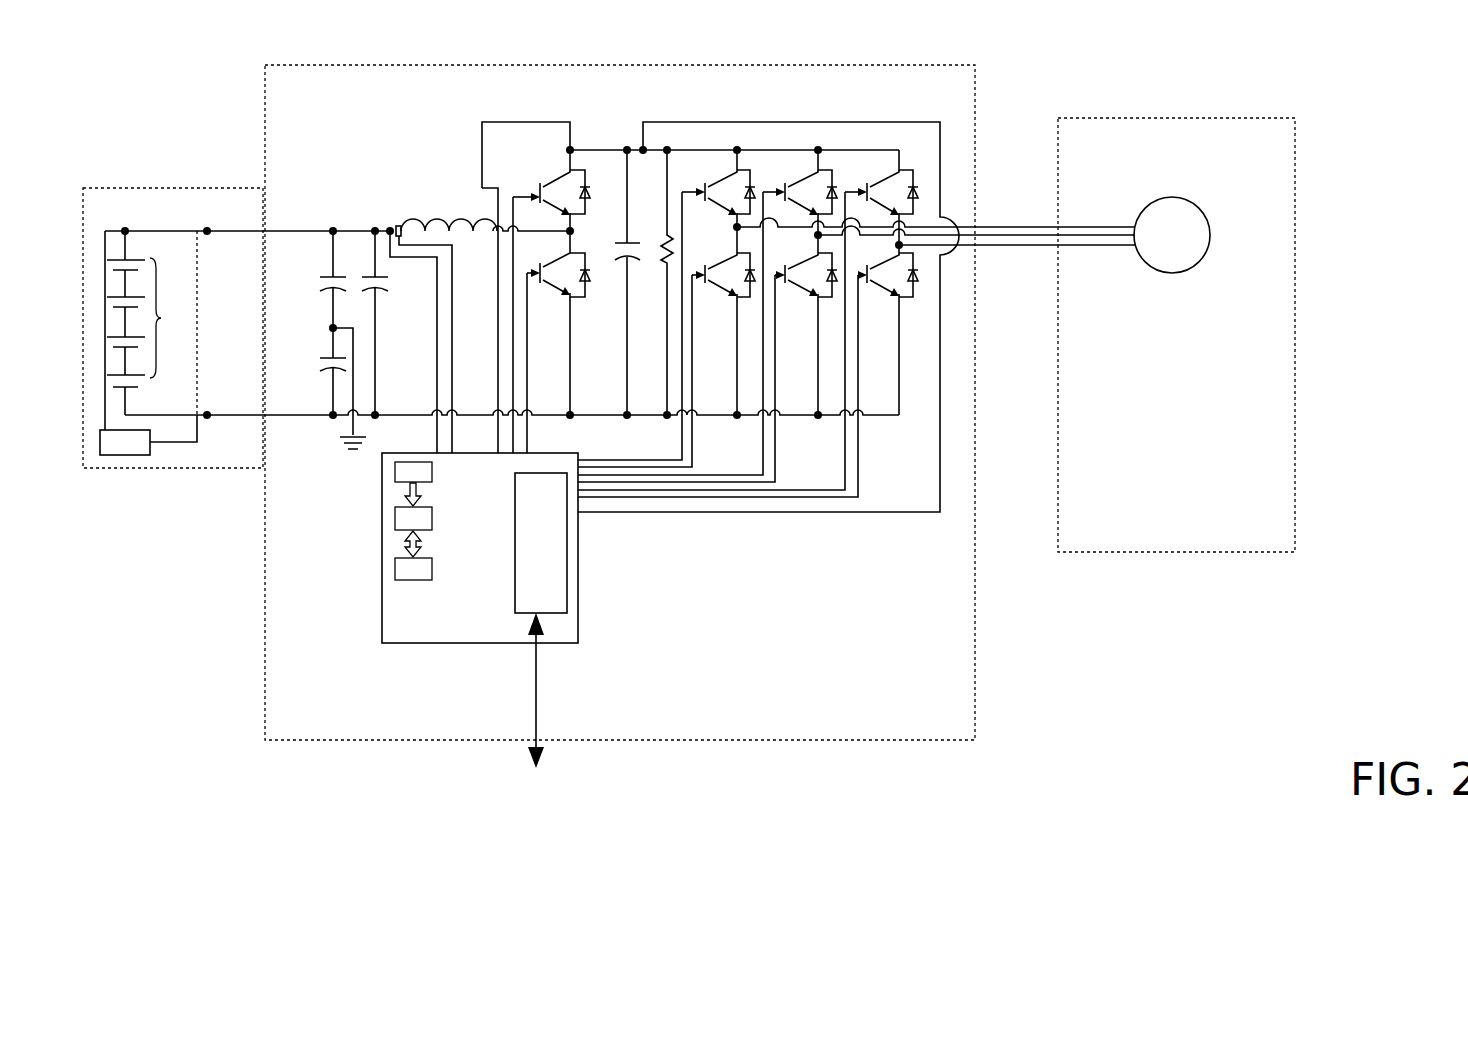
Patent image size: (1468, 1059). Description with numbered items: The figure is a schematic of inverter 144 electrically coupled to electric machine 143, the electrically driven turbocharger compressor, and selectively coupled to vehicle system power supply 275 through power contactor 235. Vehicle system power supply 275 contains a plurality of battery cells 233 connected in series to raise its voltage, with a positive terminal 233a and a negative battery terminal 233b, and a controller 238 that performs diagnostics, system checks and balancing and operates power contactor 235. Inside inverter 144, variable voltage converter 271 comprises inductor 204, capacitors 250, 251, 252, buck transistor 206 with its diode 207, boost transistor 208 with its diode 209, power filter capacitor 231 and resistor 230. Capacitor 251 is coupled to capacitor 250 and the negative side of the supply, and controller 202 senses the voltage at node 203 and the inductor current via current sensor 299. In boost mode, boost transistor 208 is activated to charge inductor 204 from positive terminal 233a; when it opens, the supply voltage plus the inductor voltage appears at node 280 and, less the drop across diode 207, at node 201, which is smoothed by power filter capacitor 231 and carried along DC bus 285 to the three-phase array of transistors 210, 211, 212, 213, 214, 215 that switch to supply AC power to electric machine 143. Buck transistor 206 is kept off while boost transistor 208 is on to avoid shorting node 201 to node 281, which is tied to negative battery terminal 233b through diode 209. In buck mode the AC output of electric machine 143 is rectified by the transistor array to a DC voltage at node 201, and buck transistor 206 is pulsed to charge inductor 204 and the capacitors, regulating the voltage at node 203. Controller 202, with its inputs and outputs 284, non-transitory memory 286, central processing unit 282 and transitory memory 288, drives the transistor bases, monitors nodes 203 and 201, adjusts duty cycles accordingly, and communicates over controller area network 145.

The inverter 144 is at (582, 65).
The vehicle system power supply 275 is at (178, 174).
The positive terminal 233a is at (126, 230).
The negative battery terminal 233b is at (126, 413).
The battery cells 233 is at (152, 330).
The power contactor 235 is at (199, 305).
The controller 238 is at (148, 435).
The node 203 is at (373, 228).
The current sensor 299 is at (398, 226).
The inductor 204 is at (481, 222).
The variable voltage converter 271 is at (426, 166).
The capacitor 250 is at (330, 290).
The capacitor 251 is at (329, 370).
The capacitor 252 is at (385, 288).
The node 201 is at (628, 148).
The DC bus 285 is at (732, 111).
The buck transistor 206 is at (546, 168).
The diode 207 is at (603, 182).
The node 280 is at (575, 231).
The boost transistor 208 is at (539, 293).
The diode 209 is at (596, 298).
The power filter capacitor 231 is at (633, 247).
The resistor 230 is at (662, 263).
The transistor 211 is at (731, 176).
The transistor 213 is at (811, 176).
The transistor 215 is at (893, 176).
The transistor 210 is at (717, 292).
The transistor 212 is at (799, 292).
The transistor 214 is at (880, 292).
The node 281 is at (572, 413).
The non-transitory memory 286 is at (394, 472).
The central processing unit 282 is at (394, 515).
The transitory memory 288 is at (394, 568).
The inputs and outputs 284 is at (553, 596).
The controller 202 is at (440, 644).
The controller area network 145 is at (541, 690).
The electric machine 143 is at (1016, 335).